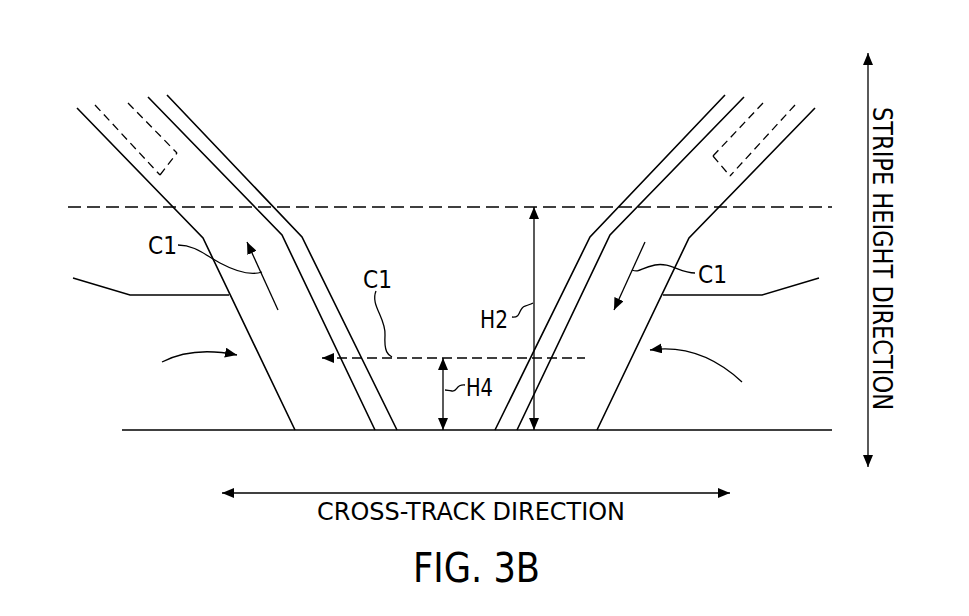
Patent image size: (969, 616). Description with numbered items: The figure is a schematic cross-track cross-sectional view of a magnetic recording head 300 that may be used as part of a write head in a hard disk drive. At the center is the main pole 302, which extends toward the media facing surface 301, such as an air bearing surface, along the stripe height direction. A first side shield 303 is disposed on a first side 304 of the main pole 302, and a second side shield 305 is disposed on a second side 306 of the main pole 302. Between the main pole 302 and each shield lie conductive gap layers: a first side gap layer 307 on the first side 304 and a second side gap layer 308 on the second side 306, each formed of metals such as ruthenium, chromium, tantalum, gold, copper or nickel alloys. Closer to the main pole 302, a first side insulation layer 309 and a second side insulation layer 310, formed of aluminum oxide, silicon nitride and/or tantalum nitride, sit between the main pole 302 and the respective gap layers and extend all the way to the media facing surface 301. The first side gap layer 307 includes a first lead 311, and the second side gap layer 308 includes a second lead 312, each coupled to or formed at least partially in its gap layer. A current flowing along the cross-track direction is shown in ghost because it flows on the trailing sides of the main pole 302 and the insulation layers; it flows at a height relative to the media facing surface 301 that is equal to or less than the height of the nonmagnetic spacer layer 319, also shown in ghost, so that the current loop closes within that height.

The magnetic recording head 300 is at (152, 40).
The media facing surface 301 is at (167, 430).
The main pole 302 is at (468, 296).
The first side shield 303 is at (807, 374).
The first side 304 is at (711, 382).
The second side shield 305 is at (227, 406).
The second side 306 is at (179, 369).
The first side gap layer 307 is at (560, 413).
The second side gap layer 308 is at (330, 412).
The first side insulation layer 309 is at (642, 194).
The second side insulation layer 310 is at (245, 186).
The first lead 311 is at (752, 152).
The second lead 312 is at (125, 145).
The nonmagnetic spacer layer 319 is at (90, 208).